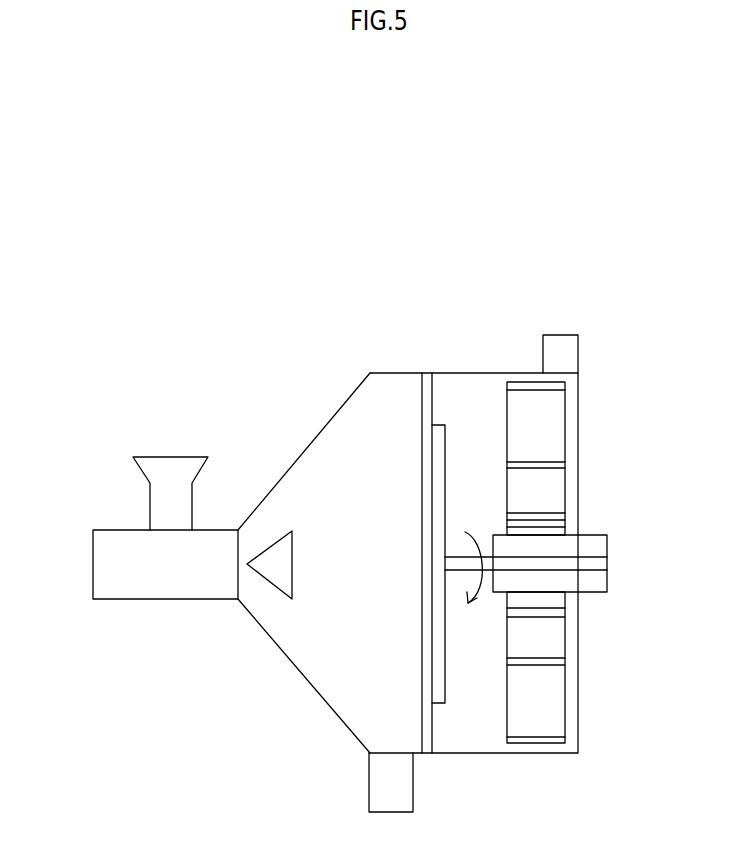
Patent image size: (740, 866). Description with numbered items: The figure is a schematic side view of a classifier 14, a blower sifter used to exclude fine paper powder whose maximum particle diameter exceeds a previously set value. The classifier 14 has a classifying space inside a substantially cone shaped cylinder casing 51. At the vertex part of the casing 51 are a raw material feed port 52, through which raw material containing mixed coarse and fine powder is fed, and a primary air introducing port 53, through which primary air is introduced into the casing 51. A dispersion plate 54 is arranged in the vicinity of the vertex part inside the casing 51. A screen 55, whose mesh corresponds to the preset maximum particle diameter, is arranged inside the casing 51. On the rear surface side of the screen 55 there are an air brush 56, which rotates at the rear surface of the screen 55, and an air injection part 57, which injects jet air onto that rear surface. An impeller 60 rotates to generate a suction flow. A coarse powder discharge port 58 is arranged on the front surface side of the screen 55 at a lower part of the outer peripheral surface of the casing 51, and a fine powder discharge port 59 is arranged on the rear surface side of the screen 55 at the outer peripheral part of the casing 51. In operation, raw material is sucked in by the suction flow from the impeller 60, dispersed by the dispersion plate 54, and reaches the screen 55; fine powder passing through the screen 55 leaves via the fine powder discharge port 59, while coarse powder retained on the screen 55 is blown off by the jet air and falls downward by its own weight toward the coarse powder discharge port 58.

The classifier 14 is at (388, 268).
The casing 51 is at (316, 433).
The raw material feed port 52 is at (172, 462).
The primary air introducing port 53 is at (107, 568).
The dispersion plate 54 is at (270, 578).
The screen 55 is at (420, 388).
The air brush 56 is at (445, 680).
The air injection part 57 is at (603, 538).
The coarse powder discharge port 58 is at (392, 805).
The fine powder discharge port 59 is at (561, 342).
The impeller 60 is at (560, 422).